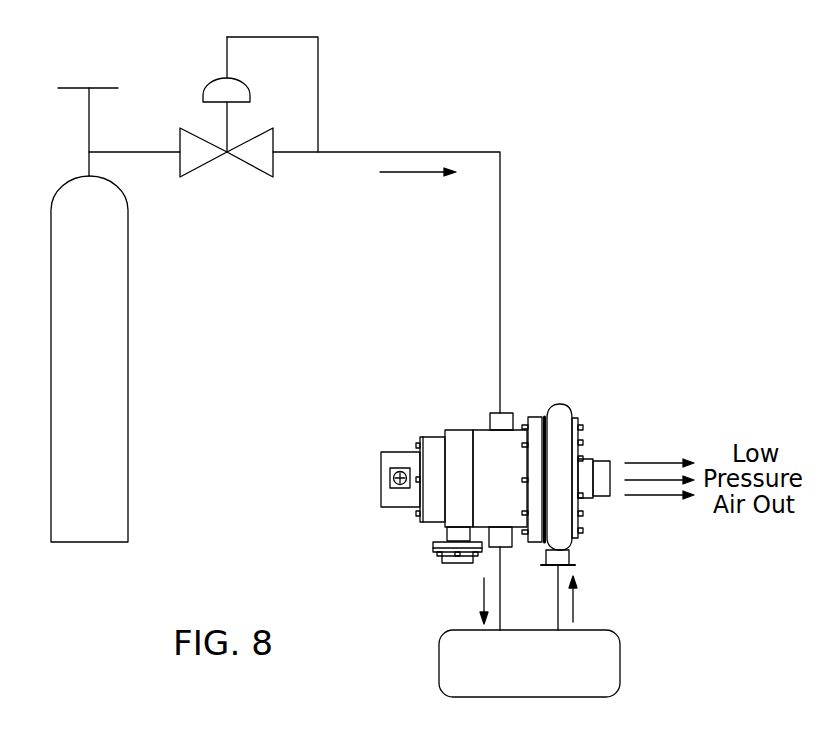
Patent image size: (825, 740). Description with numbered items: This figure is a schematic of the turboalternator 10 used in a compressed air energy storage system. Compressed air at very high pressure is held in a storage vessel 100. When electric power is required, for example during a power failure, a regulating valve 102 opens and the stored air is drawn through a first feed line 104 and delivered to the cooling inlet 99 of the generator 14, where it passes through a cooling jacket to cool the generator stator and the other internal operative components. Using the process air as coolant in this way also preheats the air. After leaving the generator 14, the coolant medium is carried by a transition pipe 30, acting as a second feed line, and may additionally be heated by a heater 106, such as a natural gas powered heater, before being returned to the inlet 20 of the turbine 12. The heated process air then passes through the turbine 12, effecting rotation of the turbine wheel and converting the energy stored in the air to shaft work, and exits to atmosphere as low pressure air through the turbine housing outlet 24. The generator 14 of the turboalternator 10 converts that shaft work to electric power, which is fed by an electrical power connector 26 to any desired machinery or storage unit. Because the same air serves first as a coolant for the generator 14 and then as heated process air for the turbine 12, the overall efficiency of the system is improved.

The turboalternator 10 is at (566, 388).
The turbine 12 is at (563, 418).
The generator 14 is at (490, 445).
The inlet 20 is at (565, 557).
The turbine housing outlet 24 is at (604, 472).
The electrical power connector 26 is at (444, 565).
The transition pipe 30 is at (501, 572).
The inlet 99 is at (504, 414).
The storage vessel 100 is at (102, 286).
The regulating valve 102 is at (207, 160).
The first feed line 104 is at (356, 152).
The heater 106 is at (604, 643).